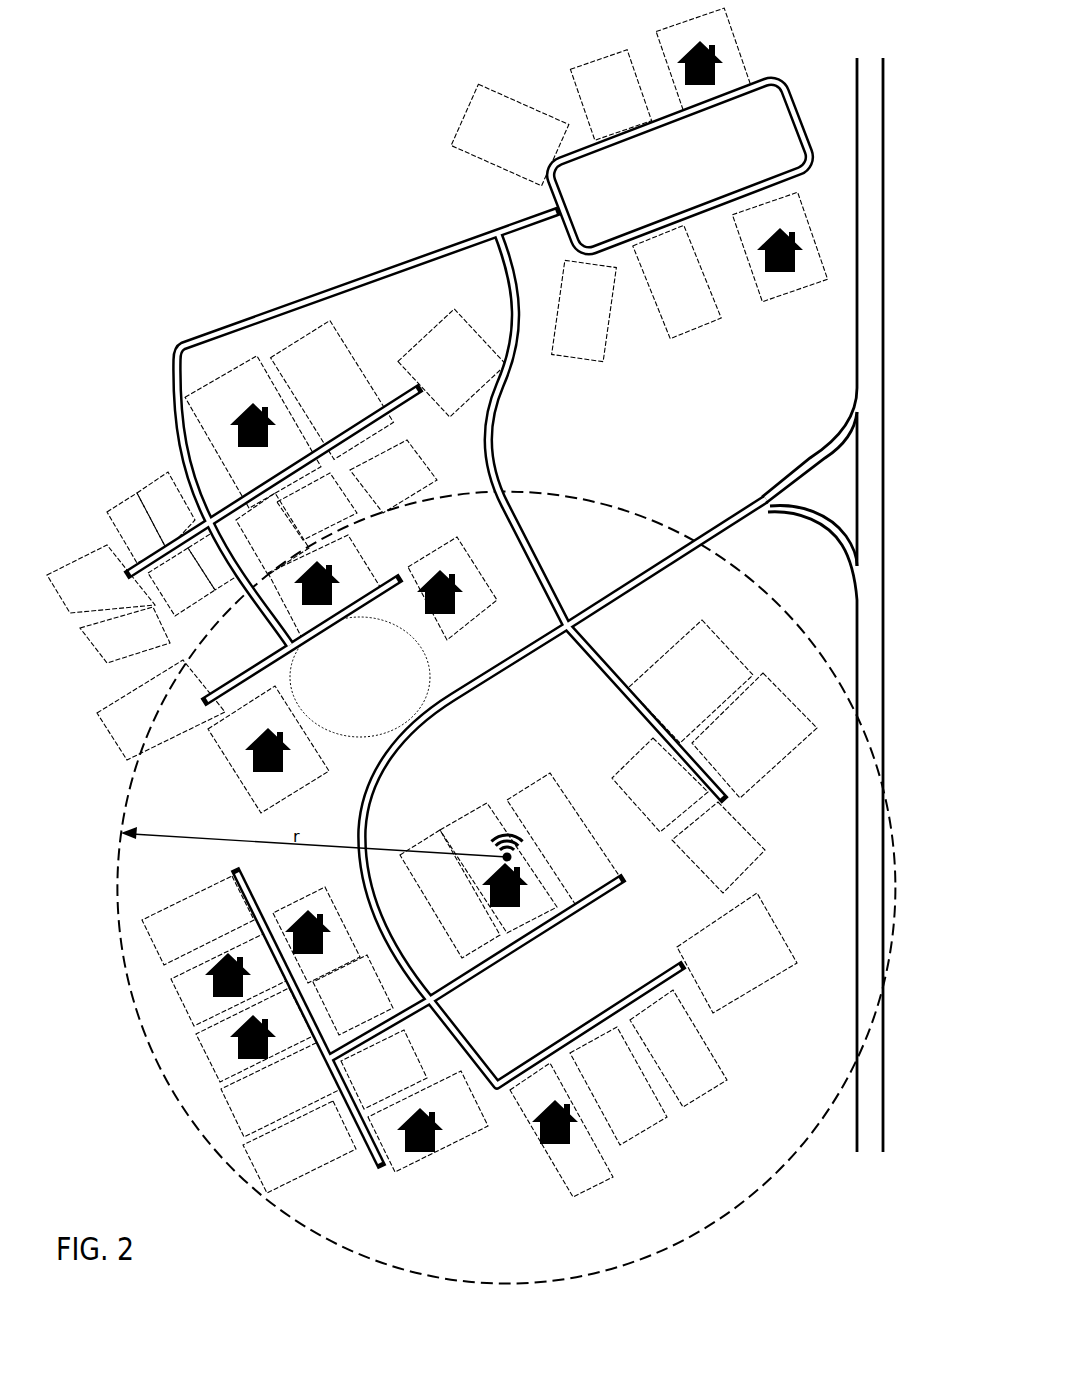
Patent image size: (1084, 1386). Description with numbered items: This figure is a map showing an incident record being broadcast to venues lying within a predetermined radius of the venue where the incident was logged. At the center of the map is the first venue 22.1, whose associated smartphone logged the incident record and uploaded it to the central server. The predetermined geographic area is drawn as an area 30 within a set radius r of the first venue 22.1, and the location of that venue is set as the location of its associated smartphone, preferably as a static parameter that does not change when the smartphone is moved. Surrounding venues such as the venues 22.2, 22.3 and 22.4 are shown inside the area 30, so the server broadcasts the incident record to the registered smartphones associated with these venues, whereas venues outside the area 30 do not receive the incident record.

The first venue 22.1 is at (510, 893).
The venue 22.2 is at (215, 990).
The venue 22.3 is at (233, 1040).
The venue 22.4 is at (552, 1125).
The area 30 is at (826, 859).